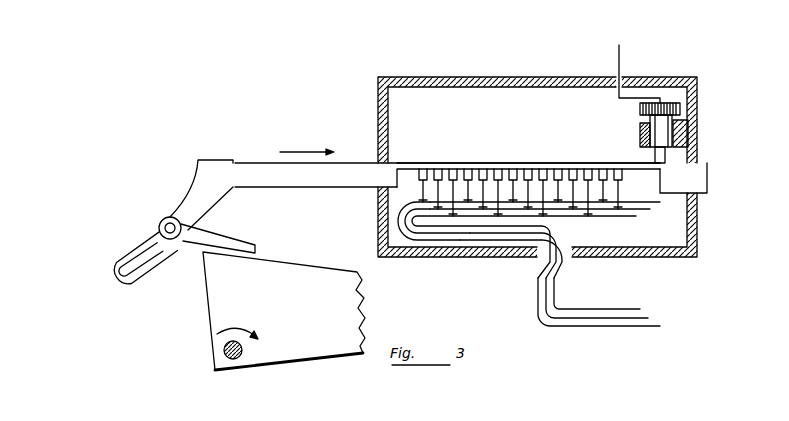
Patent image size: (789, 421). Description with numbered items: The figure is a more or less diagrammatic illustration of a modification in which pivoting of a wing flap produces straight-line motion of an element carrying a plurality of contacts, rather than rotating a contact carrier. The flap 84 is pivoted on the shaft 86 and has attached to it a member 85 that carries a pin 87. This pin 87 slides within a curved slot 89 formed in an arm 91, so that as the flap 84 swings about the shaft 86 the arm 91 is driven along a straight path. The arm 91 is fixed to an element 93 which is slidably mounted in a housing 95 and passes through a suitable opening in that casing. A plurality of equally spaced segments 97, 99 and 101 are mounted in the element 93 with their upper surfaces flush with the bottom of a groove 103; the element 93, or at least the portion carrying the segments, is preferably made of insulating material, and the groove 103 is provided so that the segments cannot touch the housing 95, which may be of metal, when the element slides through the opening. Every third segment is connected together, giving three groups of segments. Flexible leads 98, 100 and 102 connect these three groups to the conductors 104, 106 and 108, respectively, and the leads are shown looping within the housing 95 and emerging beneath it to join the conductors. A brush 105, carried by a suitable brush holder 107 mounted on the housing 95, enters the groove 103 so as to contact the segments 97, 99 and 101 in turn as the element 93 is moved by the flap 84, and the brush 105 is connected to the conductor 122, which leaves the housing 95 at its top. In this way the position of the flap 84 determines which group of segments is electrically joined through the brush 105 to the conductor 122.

The flap 84 is at (310, 364).
The member 85 is at (210, 239).
The shaft 86 is at (224, 348).
The pin 87 is at (158, 213).
The curved slot 89 is at (143, 264).
The arm 91 is at (132, 241).
The element 93 is at (333, 178).
The housing 95 is at (378, 125).
The segment 97 is at (605, 172).
The flexible lead 98 is at (558, 238).
The segment 99 is at (592, 172).
The flexible lead 100 is at (469, 240).
The segment 101 is at (560, 150).
The flexible lead 102 is at (455, 247).
The groove 103 is at (474, 163).
The conductor 104 is at (598, 309).
The brush 105 is at (655, 150).
The conductor 106 is at (647, 318).
The brush holder 107 is at (690, 117).
The conductor 108 is at (628, 328).
The conductor 122 is at (620, 60).